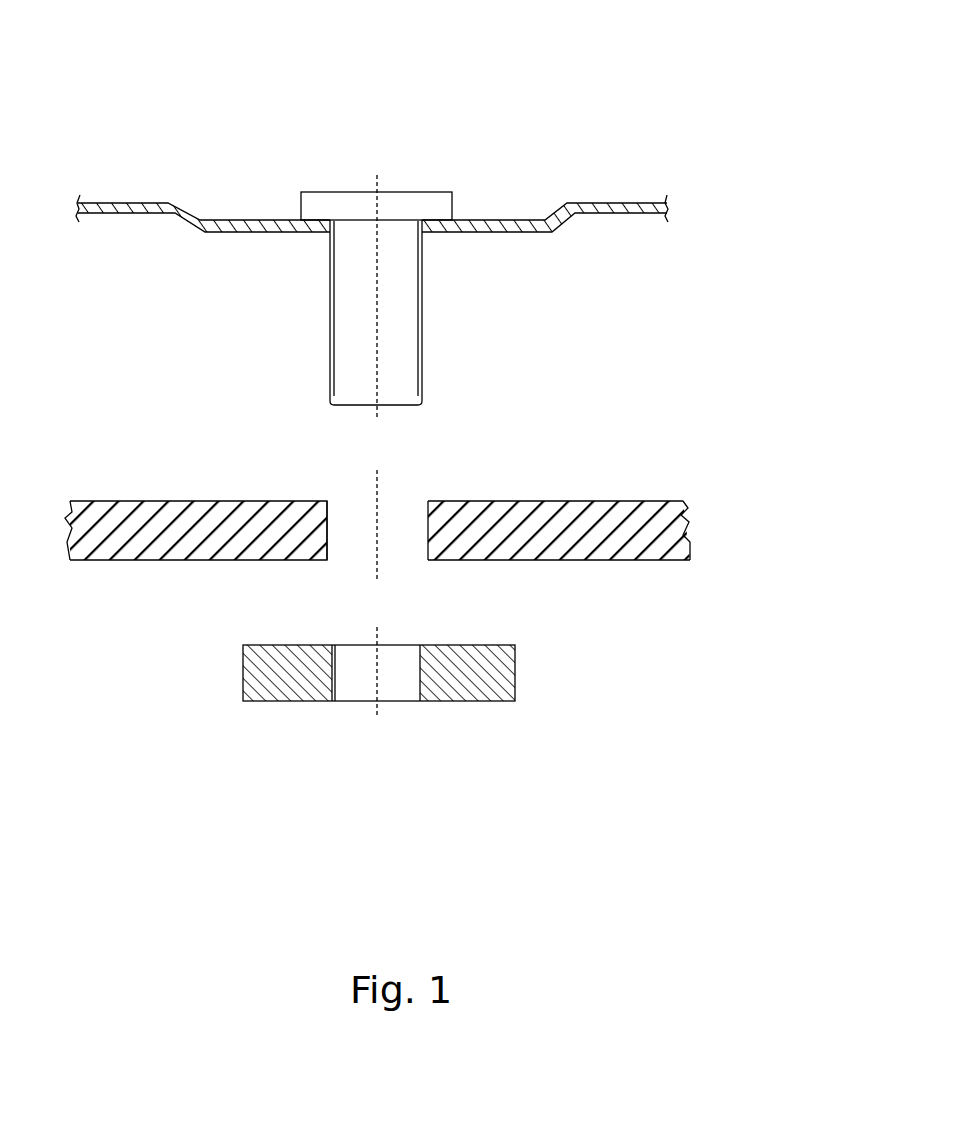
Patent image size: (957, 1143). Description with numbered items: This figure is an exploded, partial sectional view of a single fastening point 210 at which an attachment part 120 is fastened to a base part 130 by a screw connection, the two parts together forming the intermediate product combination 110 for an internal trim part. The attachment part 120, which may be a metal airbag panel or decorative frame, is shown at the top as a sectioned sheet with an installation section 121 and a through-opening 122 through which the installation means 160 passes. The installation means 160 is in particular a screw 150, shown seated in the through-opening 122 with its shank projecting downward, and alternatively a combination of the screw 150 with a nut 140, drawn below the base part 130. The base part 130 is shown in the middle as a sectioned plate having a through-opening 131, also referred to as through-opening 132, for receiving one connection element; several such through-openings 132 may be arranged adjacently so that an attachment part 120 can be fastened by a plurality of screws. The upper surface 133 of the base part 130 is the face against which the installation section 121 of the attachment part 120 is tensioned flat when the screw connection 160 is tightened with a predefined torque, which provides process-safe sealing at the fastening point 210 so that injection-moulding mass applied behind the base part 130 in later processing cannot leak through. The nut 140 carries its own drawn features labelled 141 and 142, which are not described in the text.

The intermediate product combination 110 is at (493, 86).
The attachment part 120 is at (605, 185).
The installation section 121 is at (452, 233).
The through-opening 122 is at (422, 221).
The base part 130 is at (382, 482).
The through-opening 131 is at (428, 460).
The through-opening 132 is at (352, 500).
The surface 133 is at (190, 500).
The nut 140 is at (424, 666).
The second plate hole edge 141 is at (335, 648).
The second plate hole wall 142 is at (352, 680).
The screw 150 is at (452, 297).
The screw connection 160 is at (413, 246).
The fastening point 210 is at (617, 360).